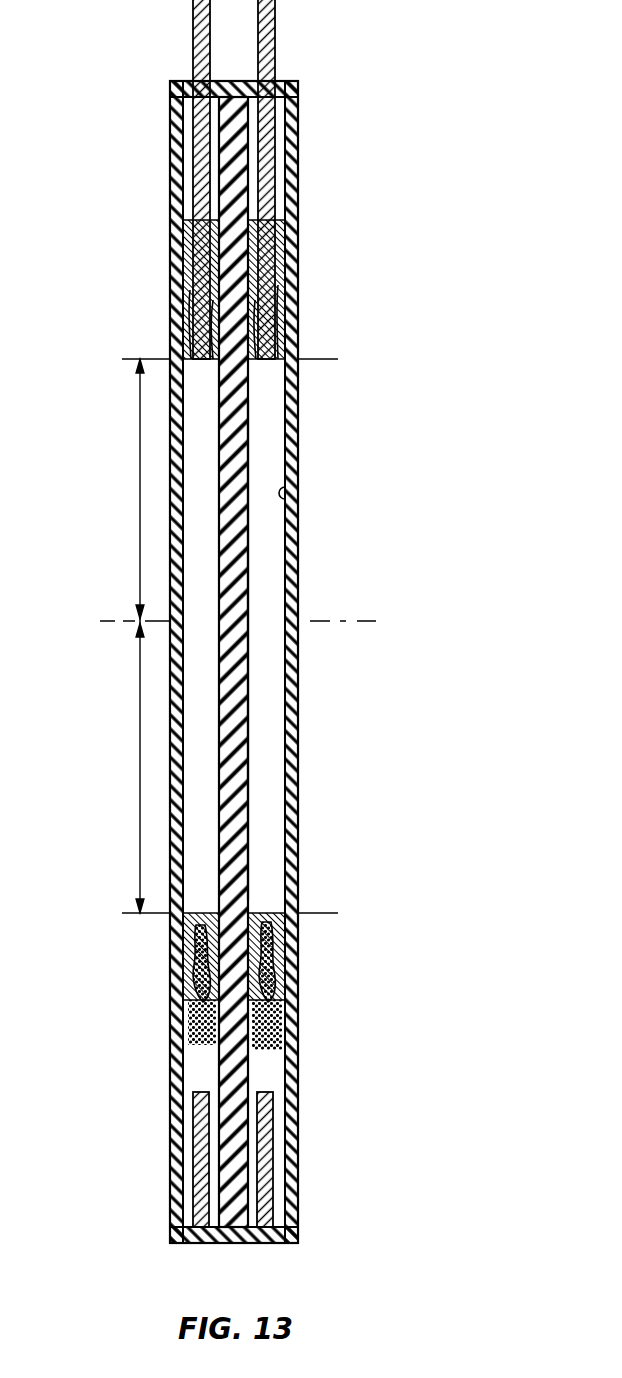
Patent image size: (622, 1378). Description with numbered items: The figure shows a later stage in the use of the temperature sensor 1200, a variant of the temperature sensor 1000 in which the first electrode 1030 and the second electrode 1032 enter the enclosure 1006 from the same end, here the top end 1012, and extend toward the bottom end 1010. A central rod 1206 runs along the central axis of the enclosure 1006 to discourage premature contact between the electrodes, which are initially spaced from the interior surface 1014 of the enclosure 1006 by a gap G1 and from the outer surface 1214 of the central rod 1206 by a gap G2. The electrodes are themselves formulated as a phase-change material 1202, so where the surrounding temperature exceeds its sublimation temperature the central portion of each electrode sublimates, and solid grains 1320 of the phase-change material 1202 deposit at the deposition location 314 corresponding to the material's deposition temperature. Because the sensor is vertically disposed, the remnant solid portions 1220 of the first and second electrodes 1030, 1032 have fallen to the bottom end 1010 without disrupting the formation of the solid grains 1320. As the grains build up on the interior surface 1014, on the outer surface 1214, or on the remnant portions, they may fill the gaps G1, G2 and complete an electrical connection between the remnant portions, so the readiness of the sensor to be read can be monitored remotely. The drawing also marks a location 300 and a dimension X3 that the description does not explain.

The temperature sensor 1000 is at (9, 36).
The temperature sensor 1200 is at (440, 104).
The enclosure 1006 is at (292, 452).
The top end 1012 is at (310, 89).
The bottom end 1010 is at (312, 1240).
The first electrode 1030 is at (200, 30).
The second electrode 1032 is at (268, 36).
The central rod 1206 is at (237, 808).
The outer surface of the central rod 1214 is at (248, 560).
The interior surface 1014 is at (285, 498).
The phase-change material 1202 is at (238, 684).
The remnant solid portions 1220 is at (197, 160).
The solid grains 1320 is at (292, 312).
The deposition location 314 is at (230, 635).
The midpoint plane 300 is at (237, 621).
The distance X3 is at (124, 636).
The gap G1 is at (189, 368).
The gap G2 is at (212, 368).